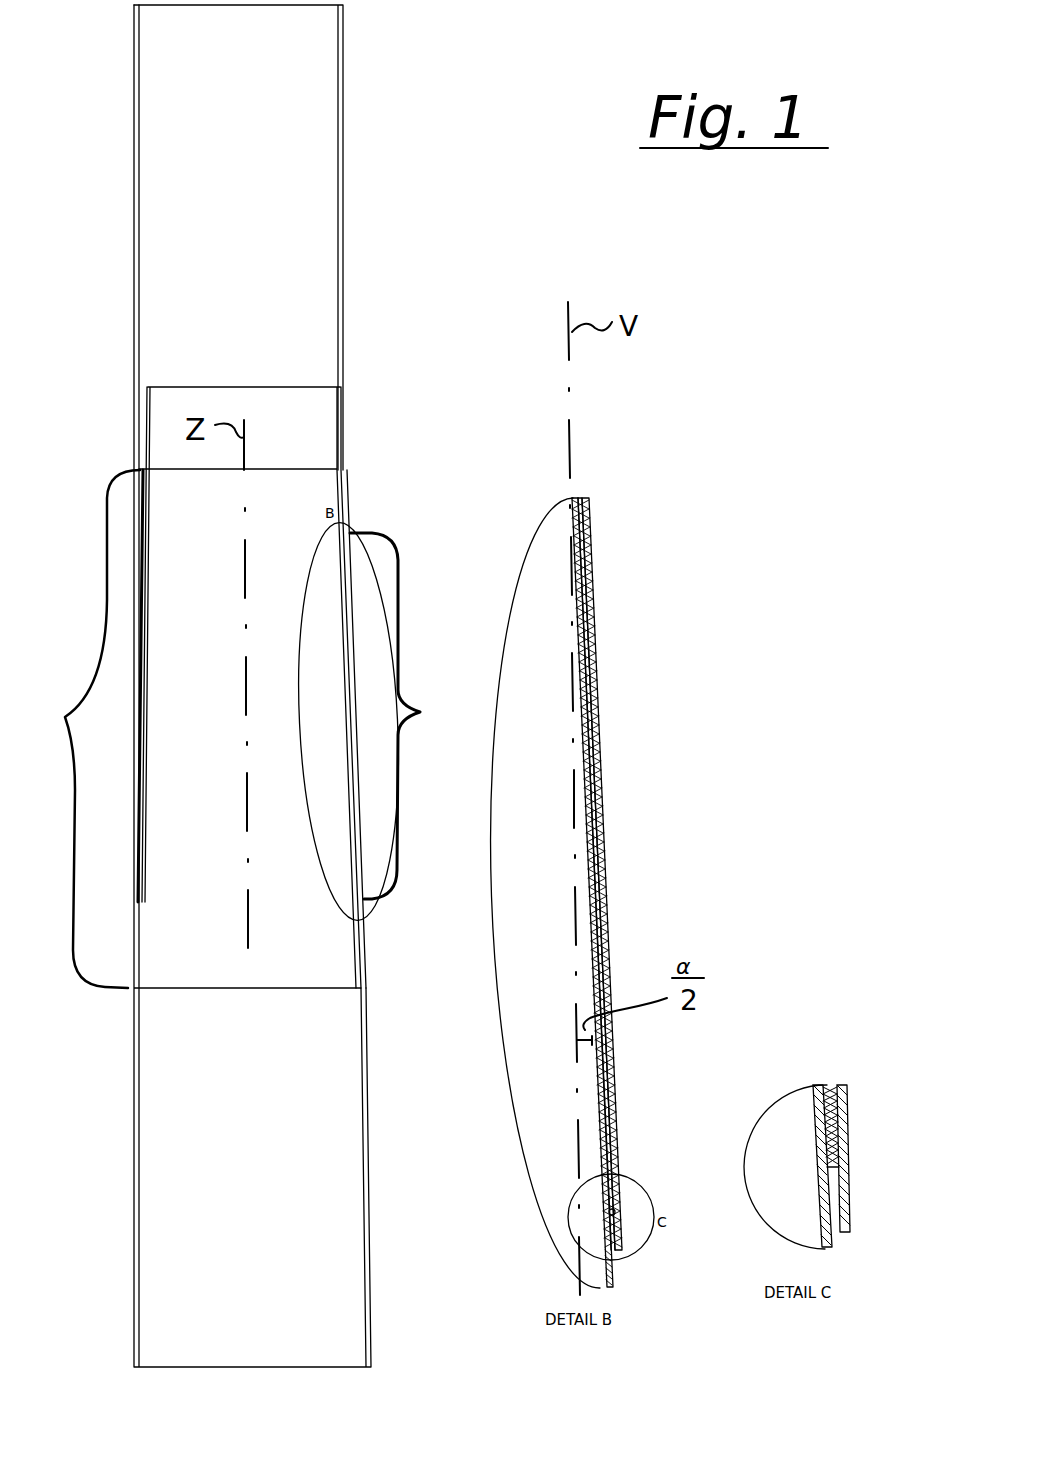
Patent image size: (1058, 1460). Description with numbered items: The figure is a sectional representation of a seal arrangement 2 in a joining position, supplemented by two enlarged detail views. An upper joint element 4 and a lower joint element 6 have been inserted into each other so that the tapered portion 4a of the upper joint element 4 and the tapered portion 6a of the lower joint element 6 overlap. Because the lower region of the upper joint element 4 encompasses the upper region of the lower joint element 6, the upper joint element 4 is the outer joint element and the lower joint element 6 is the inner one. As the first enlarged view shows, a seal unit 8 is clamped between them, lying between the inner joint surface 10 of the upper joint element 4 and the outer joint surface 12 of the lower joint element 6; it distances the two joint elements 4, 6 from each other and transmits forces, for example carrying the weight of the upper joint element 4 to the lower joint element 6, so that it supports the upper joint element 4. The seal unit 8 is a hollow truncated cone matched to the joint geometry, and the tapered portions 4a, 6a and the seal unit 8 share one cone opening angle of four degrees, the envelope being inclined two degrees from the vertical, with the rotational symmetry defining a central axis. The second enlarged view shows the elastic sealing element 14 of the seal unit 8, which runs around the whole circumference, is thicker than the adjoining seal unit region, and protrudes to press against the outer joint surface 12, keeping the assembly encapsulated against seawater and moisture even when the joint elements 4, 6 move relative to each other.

The seal arrangement 2 is at (422, 448).
The upper joint element 4 is at (345, 173).
The tapered portion of the upper joint element 4a is at (303, 687).
The lower joint element 6 is at (134, 1140).
The tapered portion of the lower joint element 6a is at (79, 729).
The seal unit 8 is at (146, 682).
The inner joint surface 10 is at (590, 600).
The outer joint surface 12 is at (585, 718).
The elastic sealing element 14 is at (612, 1215).